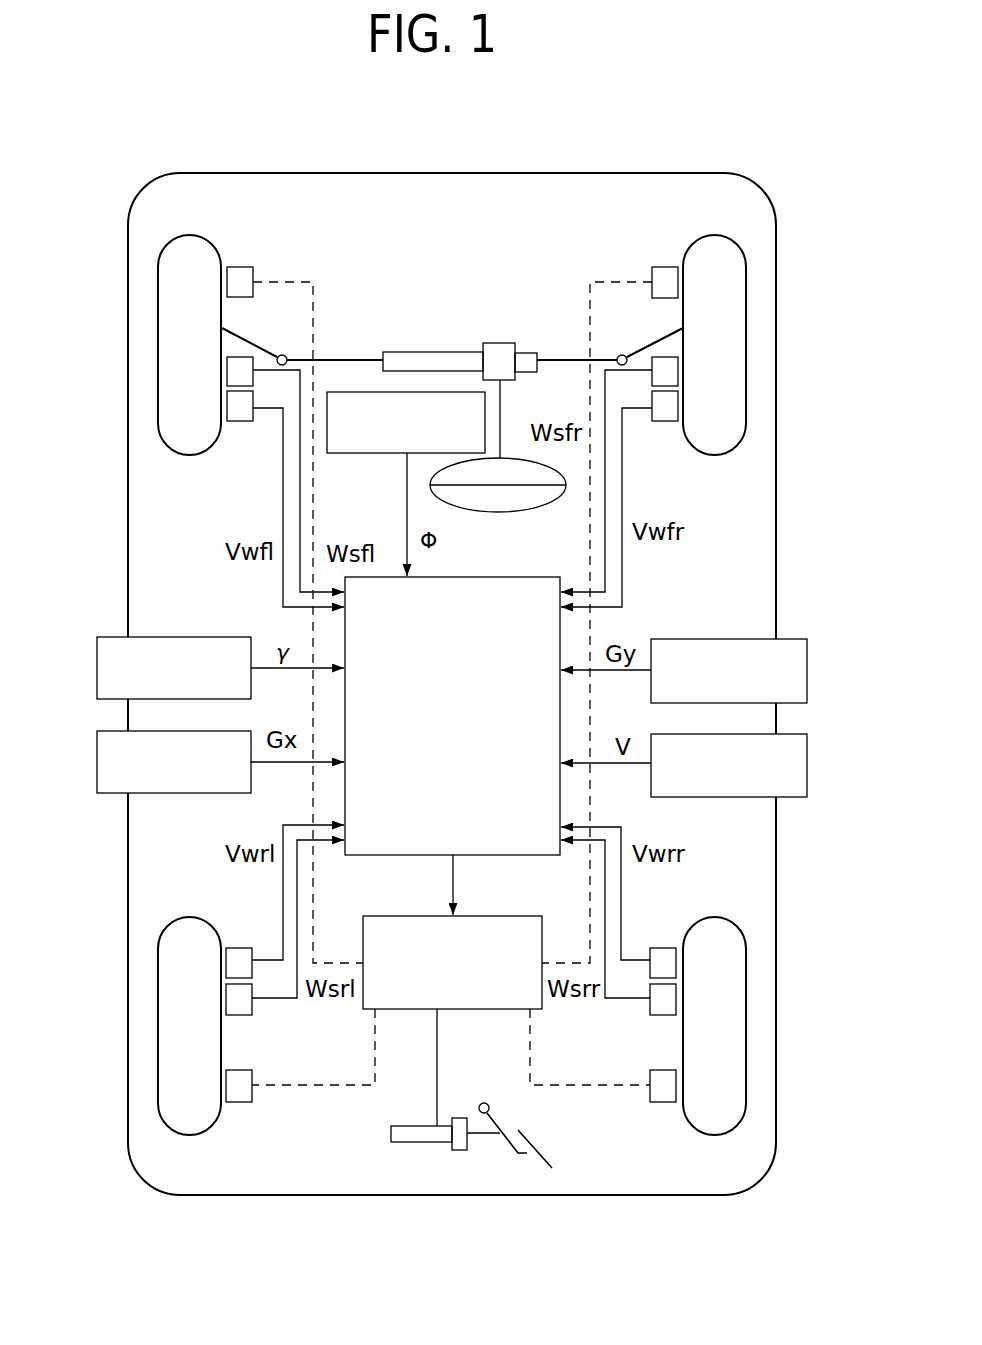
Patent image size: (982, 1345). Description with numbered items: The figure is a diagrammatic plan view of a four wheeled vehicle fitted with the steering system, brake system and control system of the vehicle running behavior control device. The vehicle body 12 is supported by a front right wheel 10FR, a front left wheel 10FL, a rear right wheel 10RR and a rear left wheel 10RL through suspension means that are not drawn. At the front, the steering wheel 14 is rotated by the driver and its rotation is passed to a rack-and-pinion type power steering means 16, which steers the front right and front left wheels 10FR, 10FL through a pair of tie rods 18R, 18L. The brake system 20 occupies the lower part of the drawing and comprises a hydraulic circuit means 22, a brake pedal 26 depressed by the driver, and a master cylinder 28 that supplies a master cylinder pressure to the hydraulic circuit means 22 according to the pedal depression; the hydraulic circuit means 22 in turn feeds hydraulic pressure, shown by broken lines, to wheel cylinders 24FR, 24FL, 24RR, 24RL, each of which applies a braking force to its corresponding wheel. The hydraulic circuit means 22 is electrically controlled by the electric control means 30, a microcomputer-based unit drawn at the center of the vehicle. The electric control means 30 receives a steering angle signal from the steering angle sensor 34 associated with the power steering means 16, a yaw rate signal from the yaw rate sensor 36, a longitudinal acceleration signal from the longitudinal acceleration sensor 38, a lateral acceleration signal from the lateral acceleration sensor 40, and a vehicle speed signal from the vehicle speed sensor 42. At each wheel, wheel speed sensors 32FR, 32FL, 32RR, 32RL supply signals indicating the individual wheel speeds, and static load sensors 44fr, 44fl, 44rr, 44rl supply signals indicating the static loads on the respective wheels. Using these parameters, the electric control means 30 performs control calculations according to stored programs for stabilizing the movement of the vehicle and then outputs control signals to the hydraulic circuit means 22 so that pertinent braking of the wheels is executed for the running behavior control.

The front left wheel 10FL is at (158, 356).
The front right wheel 10FR is at (746, 362).
The rear left wheel 10RL is at (158, 1035).
The rear right wheel 10RR is at (746, 1036).
The vehicle body 12 is at (776, 518).
The steering wheel 14 is at (498, 512).
The rack-and-pinion type power steering means 16 is at (492, 338).
The left tie rod 18L is at (243, 341).
The right tie rod 18R is at (662, 341).
The brake system 20 is at (448, 1101).
The hydraulic circuit means 22 is at (452, 932).
The front left wheel cylinder 24FL is at (240, 278).
The front right wheel cylinder 24FR is at (663, 278).
The rear left wheel cylinder 24RL is at (240, 1082).
The rear right wheel cylinder 24RR is at (662, 1082).
The brake pedal 26 is at (540, 1153).
The master cylinder 28 is at (408, 1143).
The electric control means 30 is at (452, 716).
The front left wheel speed sensor 32FL is at (240, 413).
The front right wheel speed sensor 32FR is at (664, 413).
The rear left wheel speed sensor 32RL is at (240, 955).
The rear right wheel speed sensor 32RR is at (662, 955).
The steering angle sensor 34 is at (366, 453).
The yaw rate sensor 36 is at (191, 637).
The longitudinal acceleration sensor 38 is at (191, 793).
The lateral acceleration sensor 40 is at (713, 639).
The vehicle speed sensor 42 is at (807, 762).
The front left static load sensor 44fl is at (245, 362).
The front right static load sensor 44fr is at (660, 362).
The rear left static load sensor 44rl is at (236, 1008).
The rear right static load sensor 44rr is at (665, 1008).